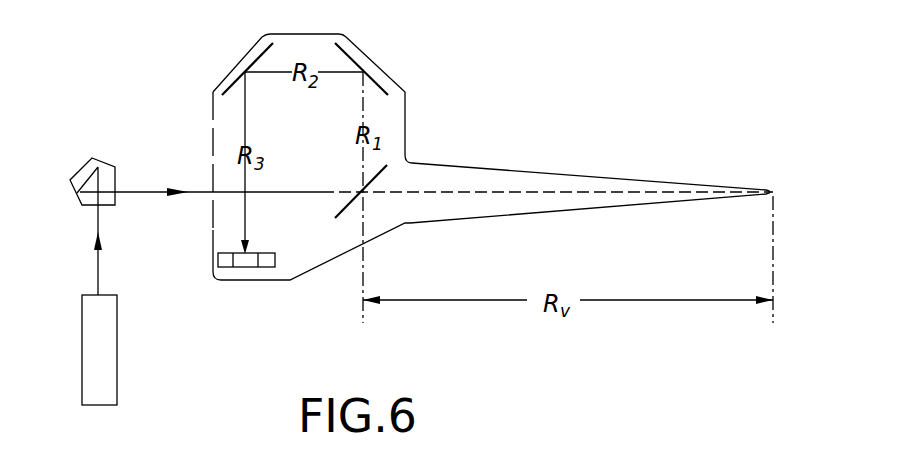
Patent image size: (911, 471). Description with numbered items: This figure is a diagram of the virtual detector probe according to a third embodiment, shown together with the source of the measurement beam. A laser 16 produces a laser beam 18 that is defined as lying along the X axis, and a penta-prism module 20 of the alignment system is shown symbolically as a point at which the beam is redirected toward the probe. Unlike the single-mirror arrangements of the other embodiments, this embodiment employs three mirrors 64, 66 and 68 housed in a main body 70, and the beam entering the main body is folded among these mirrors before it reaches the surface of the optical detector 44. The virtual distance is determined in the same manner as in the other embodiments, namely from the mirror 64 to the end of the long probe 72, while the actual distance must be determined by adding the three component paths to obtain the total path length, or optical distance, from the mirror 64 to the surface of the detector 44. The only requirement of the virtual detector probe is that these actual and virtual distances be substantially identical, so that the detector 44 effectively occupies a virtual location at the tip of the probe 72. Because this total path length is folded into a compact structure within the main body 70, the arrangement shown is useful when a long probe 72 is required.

The laser 16 is at (82, 347).
The laser beam 18 is at (144, 190).
The penta-prism module 20 is at (76, 196).
The optical detector 44 is at (250, 264).
The mirror 64 is at (343, 210).
The mirror 66 is at (381, 80).
The mirror 68 is at (233, 83).
The main body 70 is at (328, 262).
The probe 72 is at (628, 165).